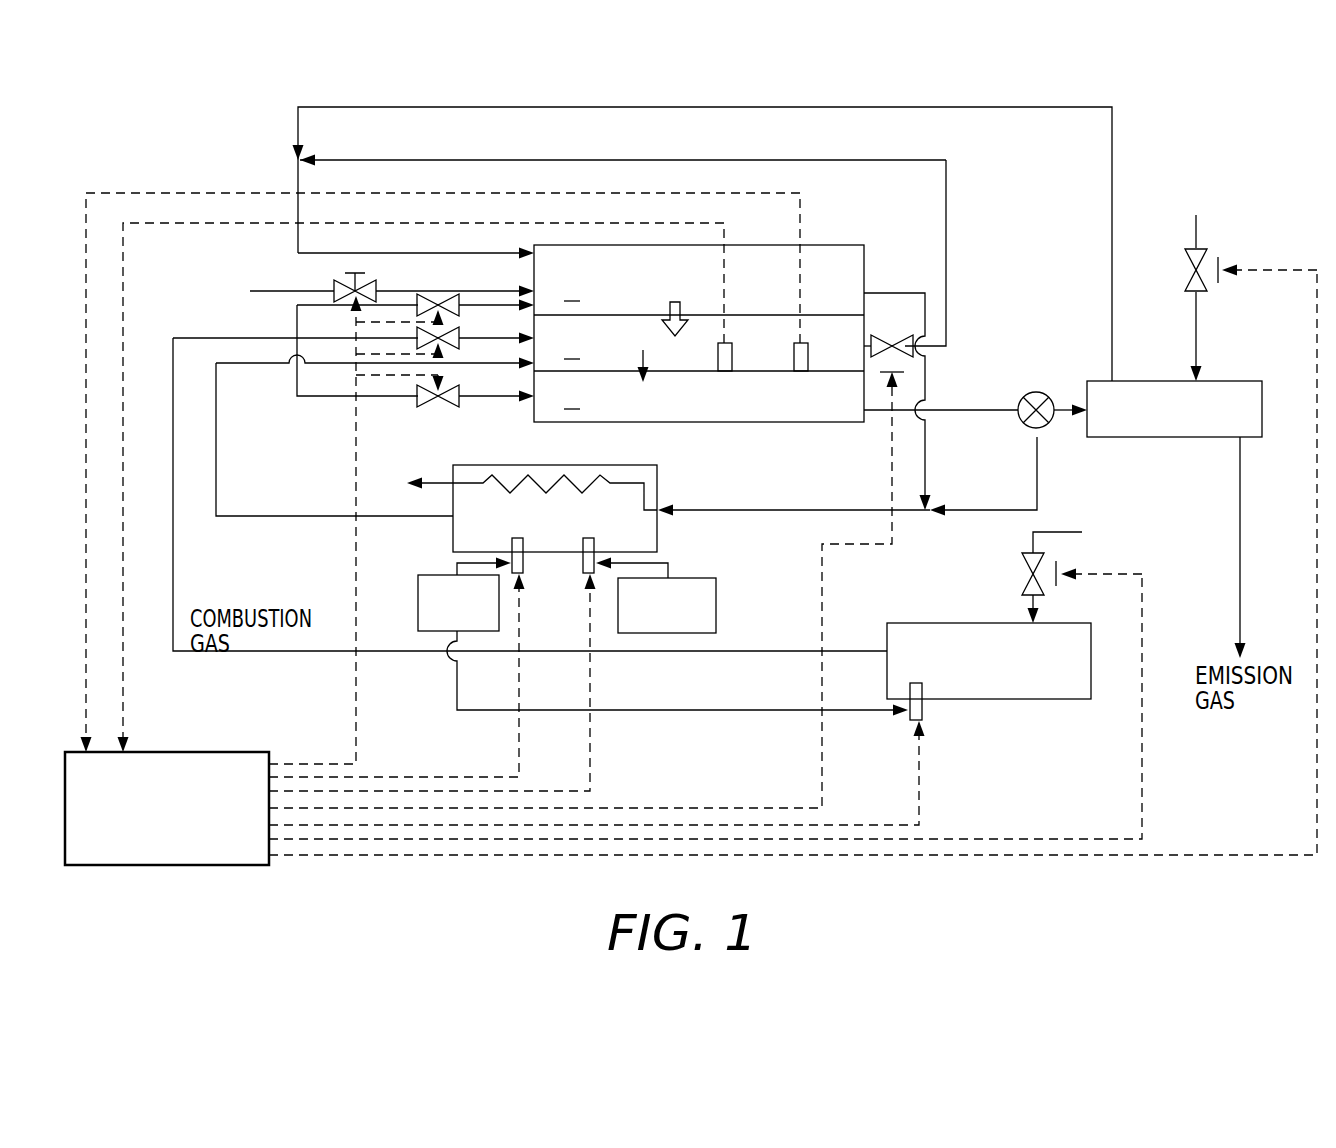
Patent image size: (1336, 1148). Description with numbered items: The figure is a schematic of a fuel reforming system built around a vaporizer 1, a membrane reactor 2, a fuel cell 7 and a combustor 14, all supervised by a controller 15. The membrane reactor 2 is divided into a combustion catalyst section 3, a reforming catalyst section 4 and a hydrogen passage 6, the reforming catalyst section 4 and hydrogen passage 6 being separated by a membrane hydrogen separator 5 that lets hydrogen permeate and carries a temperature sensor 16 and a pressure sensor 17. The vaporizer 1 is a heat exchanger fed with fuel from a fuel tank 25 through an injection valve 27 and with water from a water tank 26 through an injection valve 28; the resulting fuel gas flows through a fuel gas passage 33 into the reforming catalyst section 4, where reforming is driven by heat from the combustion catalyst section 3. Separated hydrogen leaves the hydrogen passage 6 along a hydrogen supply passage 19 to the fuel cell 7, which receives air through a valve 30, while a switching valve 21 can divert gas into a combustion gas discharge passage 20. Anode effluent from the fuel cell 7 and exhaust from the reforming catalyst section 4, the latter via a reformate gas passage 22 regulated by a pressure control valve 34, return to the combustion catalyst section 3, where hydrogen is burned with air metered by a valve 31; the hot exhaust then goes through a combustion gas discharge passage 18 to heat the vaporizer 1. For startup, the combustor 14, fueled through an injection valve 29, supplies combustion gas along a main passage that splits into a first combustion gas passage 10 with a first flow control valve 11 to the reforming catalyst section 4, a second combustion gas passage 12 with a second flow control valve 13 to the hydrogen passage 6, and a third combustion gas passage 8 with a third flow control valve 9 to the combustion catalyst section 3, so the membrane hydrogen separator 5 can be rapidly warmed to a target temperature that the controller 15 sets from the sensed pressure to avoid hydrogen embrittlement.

The vaporizer 1 is at (657, 530).
The membrane reactor 2 is at (699, 310).
The combustion catalyst section 3 is at (699, 303).
The reforming catalyst section 4 is at (699, 357).
The membrane hydrogen separator 5 is at (829, 371).
The hydrogen passage 6 is at (629, 399).
The fuel cell 7 is at (1162, 380).
The third combustion gas passage 8 is at (480, 304).
The third flow control valve 9 is at (430, 300).
The first combustion gas passage 10 is at (477, 338).
The first flow control valve 11 is at (430, 335).
The second combustion gas passage 12 is at (378, 396).
The second flow control valve 13 is at (445, 400).
The combustor 14 is at (1062, 699).
The controller 15 is at (225, 865).
The temperature sensor 16 is at (725, 371).
The pressure sensor 17 is at (801, 371).
The combustion gas discharge passage 18 is at (805, 512).
The hydrogen supply passage 19 is at (965, 409).
The combustion gas discharge passage 20 is at (1037, 476).
The switching valve 21 is at (1033, 392).
The reformate gas passage 22 is at (413, 160).
The fuel tank 25 is at (430, 574).
The water tank 26 is at (716, 598).
The injection valve 27 is at (524, 562).
The injection valve 28 is at (585, 578).
The injection valve 29 is at (923, 712).
The valve 30 is at (1190, 266).
The valve 31 is at (340, 290).
The fuel gas passage 33 is at (293, 516).
The pressure control valve 34 is at (908, 337).